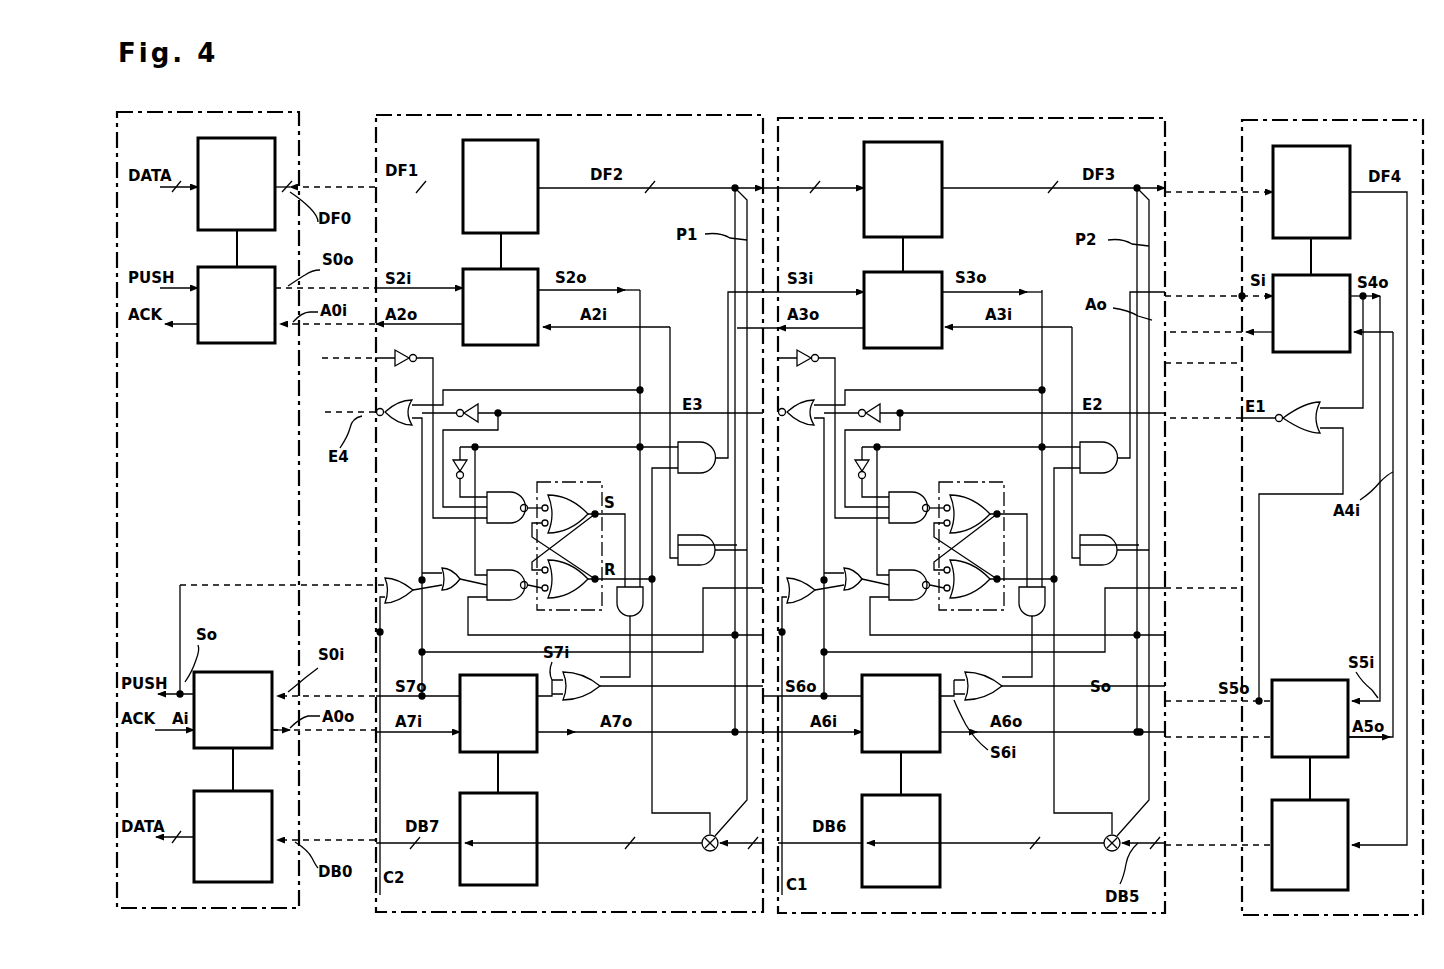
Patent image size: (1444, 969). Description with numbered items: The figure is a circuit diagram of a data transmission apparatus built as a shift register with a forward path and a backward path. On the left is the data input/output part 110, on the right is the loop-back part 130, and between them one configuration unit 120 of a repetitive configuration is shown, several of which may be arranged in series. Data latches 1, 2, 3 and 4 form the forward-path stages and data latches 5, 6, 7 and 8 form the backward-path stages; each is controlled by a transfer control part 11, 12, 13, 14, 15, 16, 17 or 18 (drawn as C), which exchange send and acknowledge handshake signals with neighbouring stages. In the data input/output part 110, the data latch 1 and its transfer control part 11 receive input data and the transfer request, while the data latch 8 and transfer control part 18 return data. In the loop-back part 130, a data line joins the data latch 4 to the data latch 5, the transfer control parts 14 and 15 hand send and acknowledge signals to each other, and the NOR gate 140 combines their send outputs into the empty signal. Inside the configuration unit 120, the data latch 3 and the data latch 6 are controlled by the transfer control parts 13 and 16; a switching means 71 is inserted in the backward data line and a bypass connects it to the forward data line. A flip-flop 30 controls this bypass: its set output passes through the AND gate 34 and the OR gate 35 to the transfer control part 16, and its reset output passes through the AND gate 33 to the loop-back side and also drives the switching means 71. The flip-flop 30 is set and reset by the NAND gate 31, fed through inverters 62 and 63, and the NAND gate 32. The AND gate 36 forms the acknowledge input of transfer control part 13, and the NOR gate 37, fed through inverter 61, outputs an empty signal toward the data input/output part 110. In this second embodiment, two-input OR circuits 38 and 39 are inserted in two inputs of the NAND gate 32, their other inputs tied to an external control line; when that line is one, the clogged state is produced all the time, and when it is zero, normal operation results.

The data latch 1 is at (275, 152).
The data latch 2 is at (538, 152).
The data latch 3 is at (942, 162).
The data latch 4 is at (1350, 160).
The data latch 5 is at (1348, 876).
The data latch 6 is at (940, 873).
The data latch 7 is at (537, 875).
The data latch 8 is at (272, 878).
The transfer control part 11 is at (252, 343).
The transfer control part 12 is at (530, 345).
The transfer control part 13 is at (930, 272).
The transfer control part 14 is at (1340, 275).
The transfer control part 15 is at (1305, 680).
The transfer control part 16 is at (940, 748).
The transfer control part 17 is at (537, 748).
The transfer control part 18 is at (240, 672).
The flip-flop 30 is at (979, 520).
The NAND gate 31 is at (912, 489).
The NAND gate 32 is at (911, 608).
The AND gate 33 is at (1106, 483).
The AND gate 34 is at (1059, 611).
The OR gate 35 is at (970, 677).
The AND gate 36 is at (1098, 573).
The NOR gate 37 is at (797, 444).
The two-input OR circuit 38 is at (853, 554).
The two-input OR circuit 39 is at (801, 561).
The inverter 61 is at (892, 392).
The inverter 62 is at (894, 452).
The inverter 63 is at (833, 377).
The switching means 71 is at (1081, 860).
The data input/output part 110 is at (272, 106).
The configuration unit 120 is at (1048, 117).
The loop-back part 130 is at (1325, 118).
The NOR gate 140 is at (1305, 433).